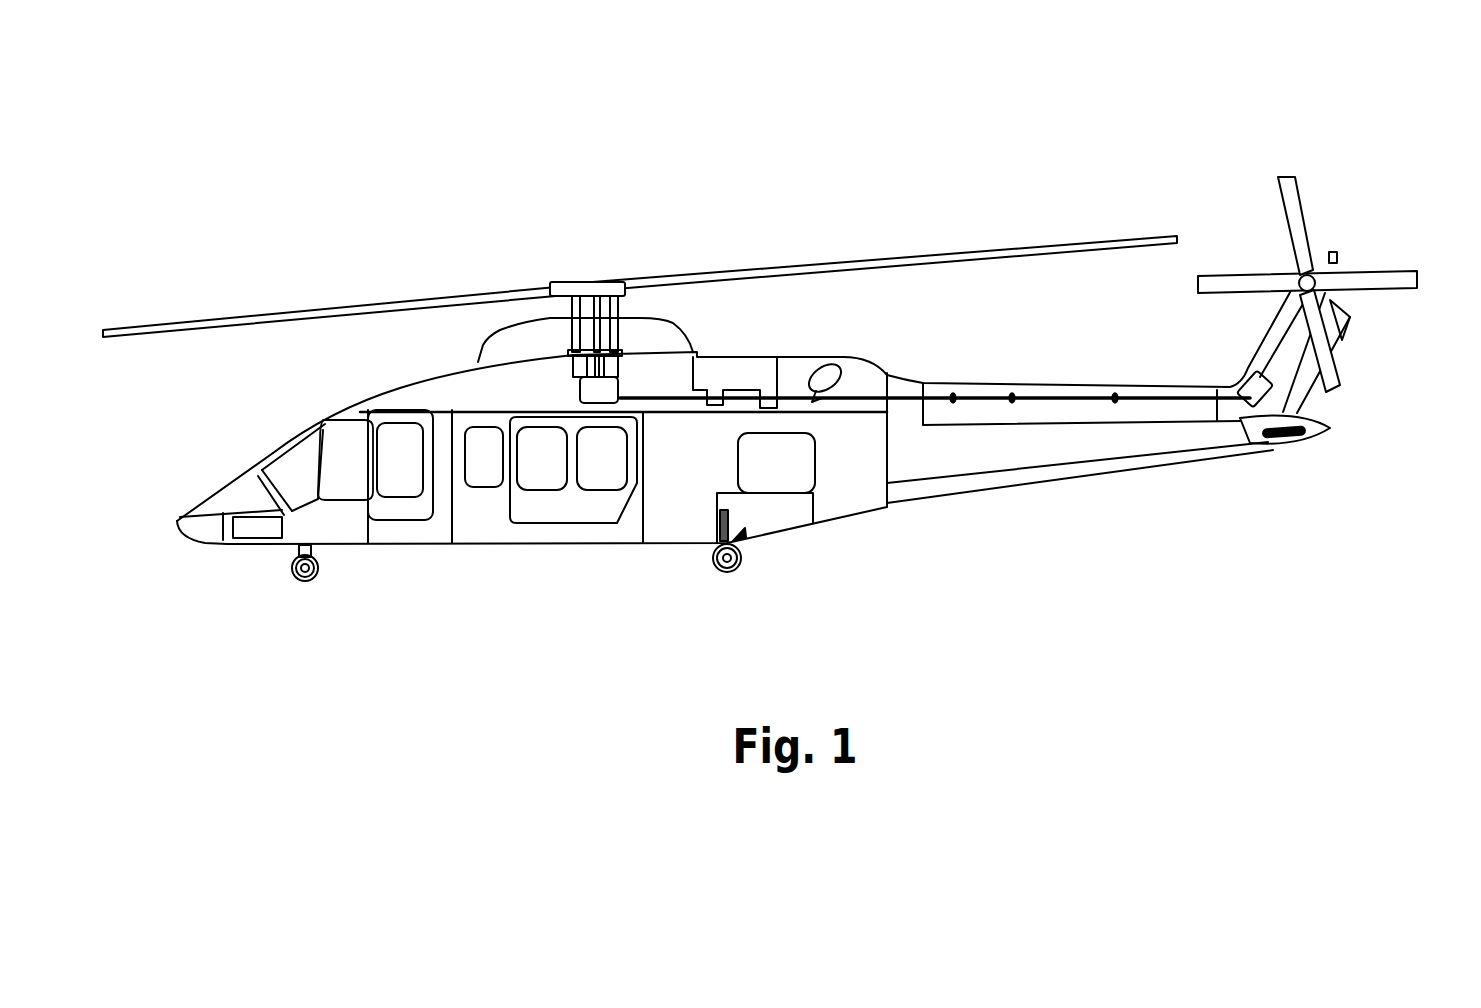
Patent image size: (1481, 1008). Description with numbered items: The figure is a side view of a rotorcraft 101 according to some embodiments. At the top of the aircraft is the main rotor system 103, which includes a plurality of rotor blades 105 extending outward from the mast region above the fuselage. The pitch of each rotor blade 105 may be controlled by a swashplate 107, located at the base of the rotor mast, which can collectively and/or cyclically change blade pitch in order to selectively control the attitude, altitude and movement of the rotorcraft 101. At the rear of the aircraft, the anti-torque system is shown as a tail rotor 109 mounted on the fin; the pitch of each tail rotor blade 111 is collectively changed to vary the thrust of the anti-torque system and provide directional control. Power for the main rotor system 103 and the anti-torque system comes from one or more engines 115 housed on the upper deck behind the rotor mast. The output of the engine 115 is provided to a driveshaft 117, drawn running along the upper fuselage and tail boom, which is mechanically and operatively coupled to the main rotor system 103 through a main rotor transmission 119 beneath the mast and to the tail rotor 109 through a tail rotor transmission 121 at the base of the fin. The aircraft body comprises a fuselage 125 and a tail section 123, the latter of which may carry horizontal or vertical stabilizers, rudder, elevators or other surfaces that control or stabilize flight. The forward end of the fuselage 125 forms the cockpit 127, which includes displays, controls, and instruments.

The rotorcraft 101 is at (413, 106).
The main rotor system 103 is at (621, 255).
The rotor blade 105 is at (1003, 243).
The swashplate 107 is at (620, 350).
The tail rotor 109 is at (1318, 125).
The tail rotor blade 111 is at (1403, 267).
The engine 115 is at (757, 357).
The driveshaft 117 is at (666, 397).
The main rotor transmission 119 is at (587, 390).
The tail rotor transmission 121 is at (1253, 393).
The tail section 123 is at (1077, 473).
The fuselage 125 is at (522, 537).
The cockpit 127 is at (273, 453).